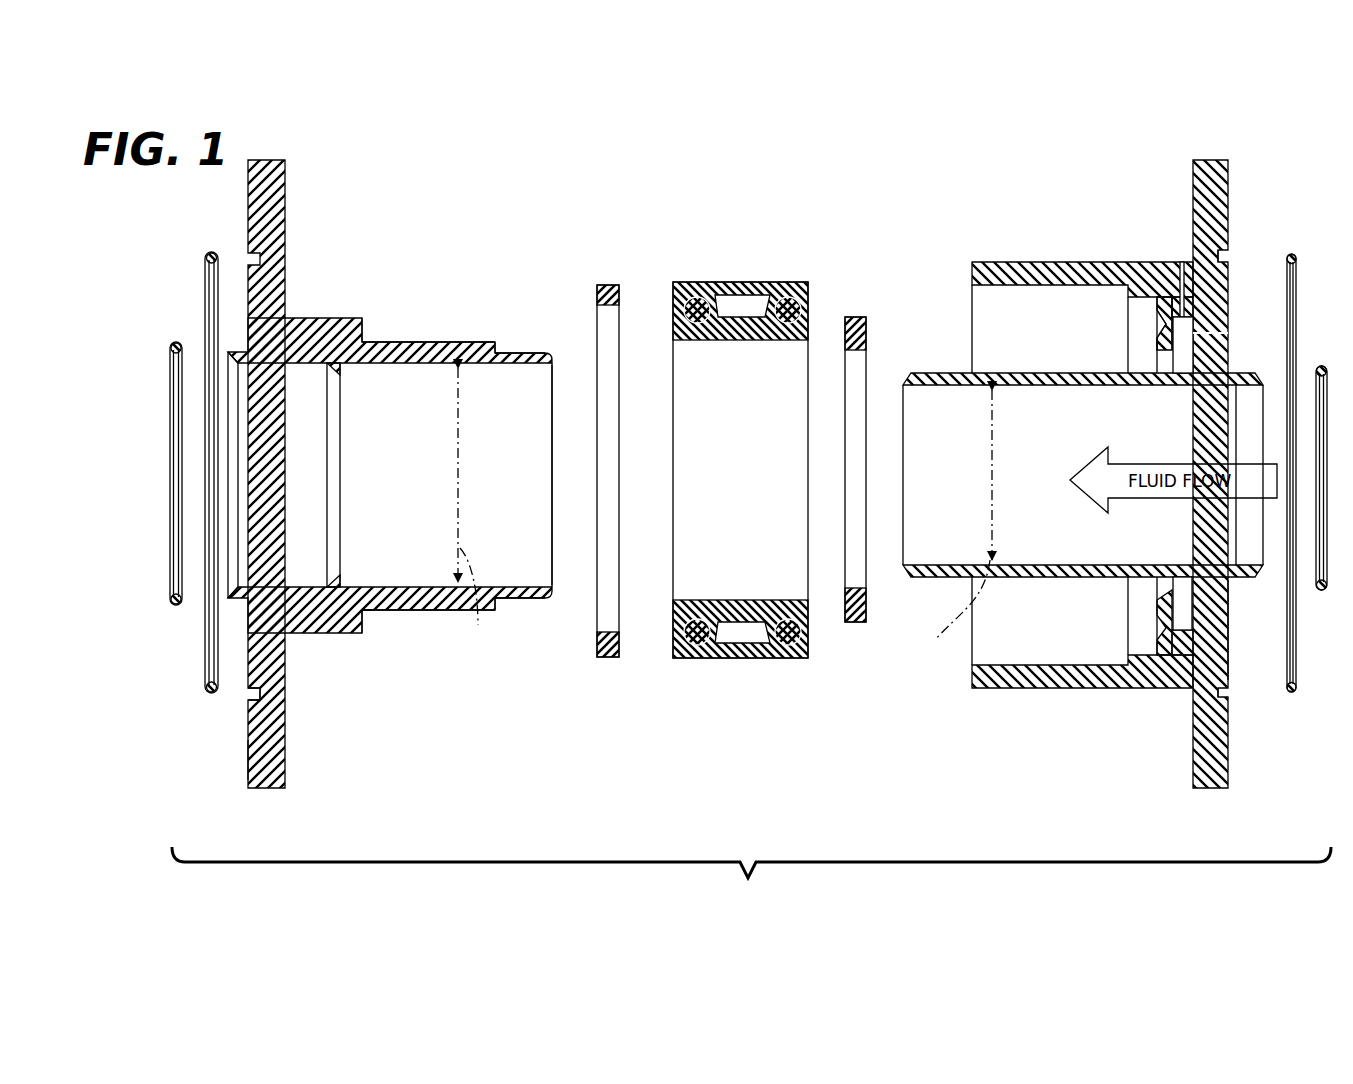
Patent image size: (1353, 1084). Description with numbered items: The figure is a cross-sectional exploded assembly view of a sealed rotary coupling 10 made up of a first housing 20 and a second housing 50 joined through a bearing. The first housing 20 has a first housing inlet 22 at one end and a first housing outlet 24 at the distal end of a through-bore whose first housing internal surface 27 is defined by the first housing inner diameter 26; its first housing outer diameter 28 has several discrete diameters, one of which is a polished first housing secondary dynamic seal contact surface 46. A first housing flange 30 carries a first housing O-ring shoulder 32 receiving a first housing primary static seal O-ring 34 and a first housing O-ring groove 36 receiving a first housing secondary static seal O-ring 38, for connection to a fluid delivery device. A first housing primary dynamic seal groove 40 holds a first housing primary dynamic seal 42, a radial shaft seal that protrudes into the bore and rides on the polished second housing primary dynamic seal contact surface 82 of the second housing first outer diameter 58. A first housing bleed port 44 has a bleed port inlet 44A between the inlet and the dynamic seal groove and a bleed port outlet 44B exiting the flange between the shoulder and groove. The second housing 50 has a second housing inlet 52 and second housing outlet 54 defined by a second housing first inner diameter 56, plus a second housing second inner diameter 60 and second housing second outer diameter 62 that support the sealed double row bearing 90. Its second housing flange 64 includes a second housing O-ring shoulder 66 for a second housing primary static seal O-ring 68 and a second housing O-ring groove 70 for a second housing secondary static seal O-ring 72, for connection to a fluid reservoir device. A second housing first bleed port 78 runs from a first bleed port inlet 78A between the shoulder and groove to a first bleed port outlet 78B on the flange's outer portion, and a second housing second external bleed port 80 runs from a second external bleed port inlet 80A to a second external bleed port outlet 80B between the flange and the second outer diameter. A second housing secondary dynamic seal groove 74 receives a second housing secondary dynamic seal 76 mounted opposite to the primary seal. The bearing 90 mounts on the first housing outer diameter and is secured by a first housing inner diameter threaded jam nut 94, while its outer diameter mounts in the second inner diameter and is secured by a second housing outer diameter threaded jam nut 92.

The sealed rotary coupling 10 is at (138, 266).
The first housing 20 is at (268, 789).
The first housing inlet 22 is at (532, 480).
The first housing outlet 24 is at (260, 480).
The first housing inner diameter 26 is at (487, 511).
The first housing internal surface 27 is at (552, 363).
The first housing outer diameter 28 is at (490, 342).
The first housing flange 30 is at (248, 768).
The first housing O-ring shoulder 32 is at (244, 600).
The first housing primary static seal O-ring 34 is at (174, 605).
The first housing O-ring groove 36 is at (252, 700).
The first housing secondary static seal O-ring 38 is at (210, 694).
The first housing primary dynamic seal groove 40 is at (336, 545).
The first housing primary dynamic seal 42 is at (363, 612).
The first housing bleed port 44 is at (302, 318).
The bleed port inlet 44A is at (388, 342).
The bleed port outlet 44B is at (385, 362).
The first housing secondary dynamic seal contact surface 46 is at (532, 353).
The second housing 50 is at (1210, 789).
The second housing inlet 52 is at (1242, 437).
The second housing outlet 54 is at (932, 437).
The second housing first inner diameter 56 is at (951, 523).
The second housing first outer diameter 58 is at (1035, 580).
The second housing second inner diameter 60 is at (990, 285).
The second housing second outer diameter 62 is at (990, 262).
The second housing flange 64 is at (1228, 728).
The second housing O-ring shoulder 66 is at (1232, 580).
The second housing primary static seal O-ring 68 is at (1320, 592).
The second housing O-ring groove 70 is at (1228, 258).
The second housing secondary static seal O-ring 72 is at (1291, 254).
The second housing secondary dynamic seal groove 74 is at (1160, 586).
The second housing secondary dynamic seal 76 is at (1157, 350).
The second housing first bleed port 78 is at (1205, 330).
The first bleed port inlet 78A is at (1228, 333).
The first bleed port outlet 78B is at (1210, 350).
The second housing second external bleed port 80 is at (1165, 297).
The second external bleed port inlet 80A is at (1160, 312).
The second external bleed port outlet 80B is at (1175, 317).
The second housing primary dynamic seal contact surface 82 is at (953, 373).
The sealed double row bearing 90 is at (673, 658).
The second housing outer diameter threaded jam nut 92 is at (597, 660).
The first housing inner diameter threaded jam nut 94 is at (855, 622).